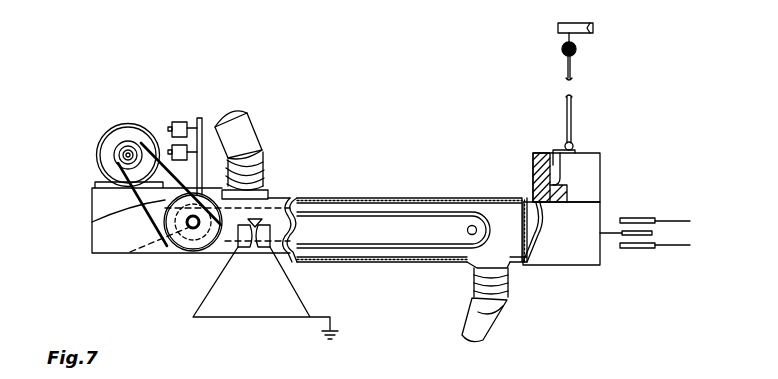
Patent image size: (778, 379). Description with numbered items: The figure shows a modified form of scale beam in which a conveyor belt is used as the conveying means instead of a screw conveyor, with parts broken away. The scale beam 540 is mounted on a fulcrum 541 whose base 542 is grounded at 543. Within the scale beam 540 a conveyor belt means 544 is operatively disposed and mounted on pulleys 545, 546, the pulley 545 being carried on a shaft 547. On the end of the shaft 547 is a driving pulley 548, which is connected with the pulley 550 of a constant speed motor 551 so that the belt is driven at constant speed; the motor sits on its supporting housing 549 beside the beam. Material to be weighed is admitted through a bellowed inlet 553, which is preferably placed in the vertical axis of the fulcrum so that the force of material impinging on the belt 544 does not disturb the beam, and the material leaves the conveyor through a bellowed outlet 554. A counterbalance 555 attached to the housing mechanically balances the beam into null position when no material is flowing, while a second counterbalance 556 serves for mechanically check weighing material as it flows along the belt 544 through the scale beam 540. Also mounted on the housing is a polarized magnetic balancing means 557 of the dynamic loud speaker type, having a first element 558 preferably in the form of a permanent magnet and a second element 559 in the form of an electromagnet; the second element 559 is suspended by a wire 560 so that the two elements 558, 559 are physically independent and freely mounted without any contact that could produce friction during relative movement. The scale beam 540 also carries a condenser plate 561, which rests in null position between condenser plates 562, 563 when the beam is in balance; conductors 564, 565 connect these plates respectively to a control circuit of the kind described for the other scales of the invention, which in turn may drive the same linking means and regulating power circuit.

The scale beam 540 is at (374, 190).
The fulcrum 541 is at (254, 228).
The base 542 is at (213, 304).
The ground 543 is at (333, 331).
The conveyor belt means 544 is at (356, 213).
The pulley 545 is at (138, 252).
The pulley 546 is at (466, 230).
The shaft 547 is at (182, 234).
The driving pulley 548 is at (194, 251).
The motor housing 549 is at (93, 223).
The pulley 550 is at (118, 161).
The constant speed motor 551 is at (110, 144).
The bellowed inlet 553 is at (263, 168).
The bellowed outlet 554 is at (474, 284).
The counterbalance 555 is at (190, 150).
The second counterbalance 556 is at (179, 122).
The polarized magnetic balancing means 557 is at (522, 151).
The first magnetic element 558 is at (533, 174).
The second element 559 is at (553, 149).
The wire 560 is at (573, 80).
The condenser plate 561 is at (620, 234).
The condenser plate 562 is at (644, 259).
The condenser plate 563 is at (636, 218).
The conductor 564 is at (686, 249).
The conductor 565 is at (679, 220).